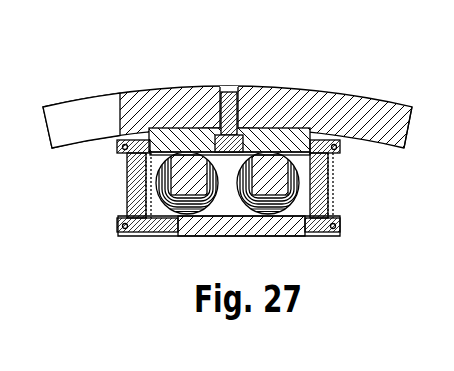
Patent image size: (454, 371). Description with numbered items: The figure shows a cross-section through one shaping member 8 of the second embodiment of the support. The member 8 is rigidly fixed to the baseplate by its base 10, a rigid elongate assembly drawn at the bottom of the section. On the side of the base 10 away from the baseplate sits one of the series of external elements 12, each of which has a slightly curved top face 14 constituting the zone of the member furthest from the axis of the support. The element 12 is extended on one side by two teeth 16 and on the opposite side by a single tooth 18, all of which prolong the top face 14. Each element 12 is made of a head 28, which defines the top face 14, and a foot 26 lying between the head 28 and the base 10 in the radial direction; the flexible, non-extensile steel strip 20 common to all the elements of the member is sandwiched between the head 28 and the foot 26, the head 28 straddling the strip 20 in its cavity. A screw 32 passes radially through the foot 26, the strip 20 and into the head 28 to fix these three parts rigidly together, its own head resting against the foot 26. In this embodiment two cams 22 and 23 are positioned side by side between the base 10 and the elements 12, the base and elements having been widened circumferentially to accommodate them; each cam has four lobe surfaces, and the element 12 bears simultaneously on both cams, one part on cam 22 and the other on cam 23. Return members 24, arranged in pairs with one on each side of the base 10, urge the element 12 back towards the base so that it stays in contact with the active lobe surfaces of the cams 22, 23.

The shaping member 8 is at (337, 62).
The base 10 is at (215, 227).
The external element 12 is at (363, 102).
The top face 14 is at (172, 82).
The tooth 16 is at (76, 123).
The tooth 18 is at (395, 134).
The strip 20 is at (270, 128).
The cam 22 is at (126, 179).
The cam 23 is at (283, 182).
The return member 24 is at (127, 197).
The foot 26 is at (186, 135).
The head 28 is at (185, 100).
The screw 32 is at (241, 108).